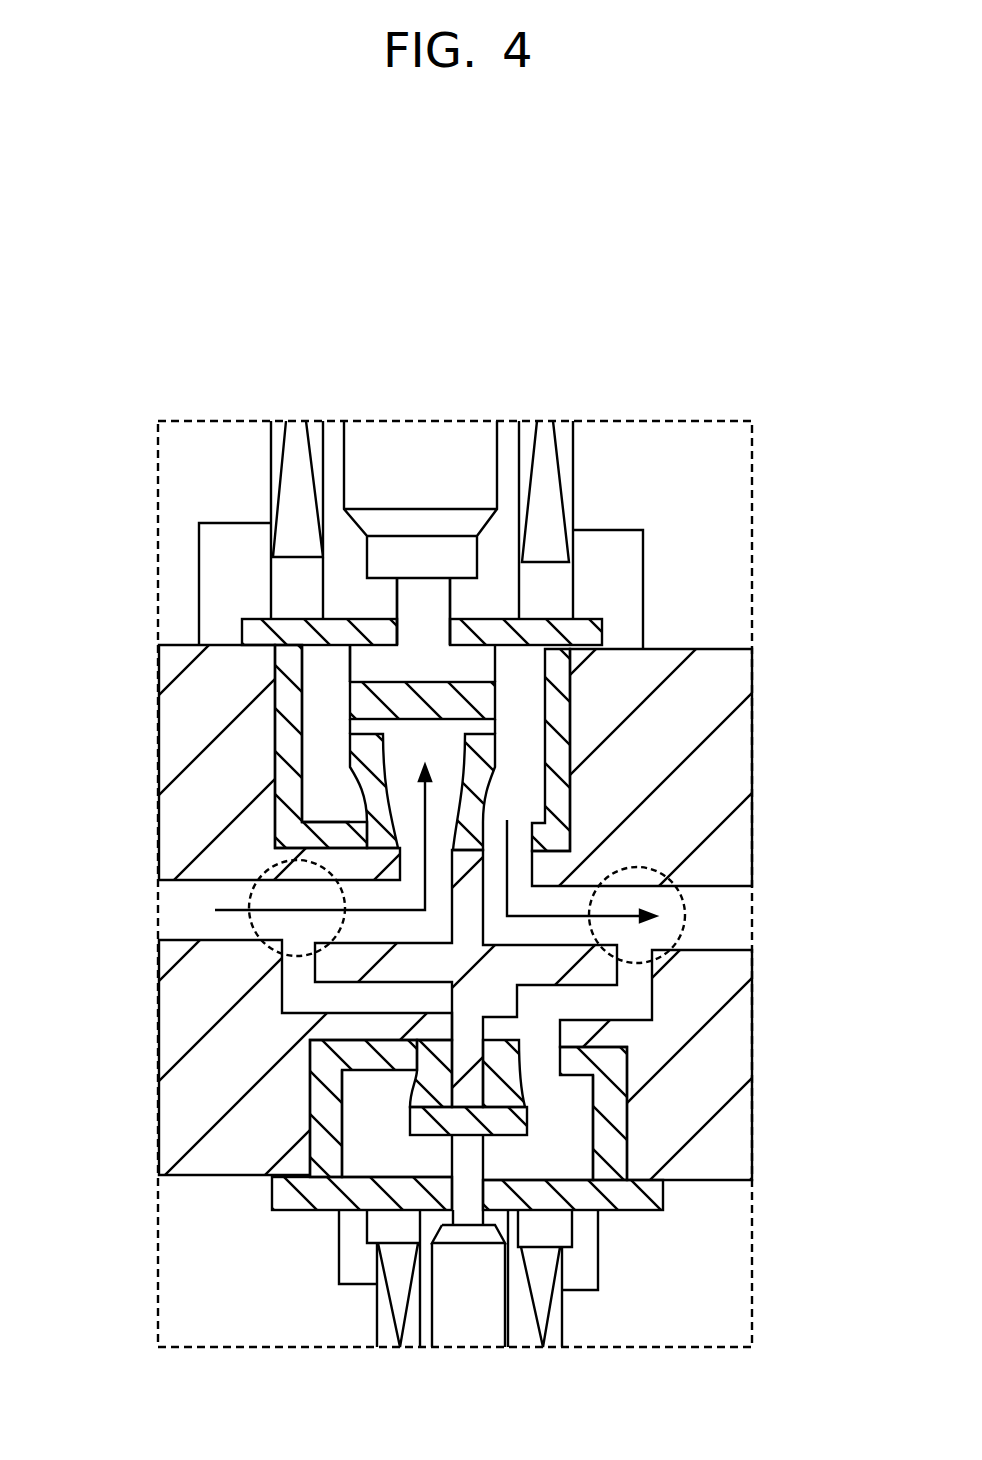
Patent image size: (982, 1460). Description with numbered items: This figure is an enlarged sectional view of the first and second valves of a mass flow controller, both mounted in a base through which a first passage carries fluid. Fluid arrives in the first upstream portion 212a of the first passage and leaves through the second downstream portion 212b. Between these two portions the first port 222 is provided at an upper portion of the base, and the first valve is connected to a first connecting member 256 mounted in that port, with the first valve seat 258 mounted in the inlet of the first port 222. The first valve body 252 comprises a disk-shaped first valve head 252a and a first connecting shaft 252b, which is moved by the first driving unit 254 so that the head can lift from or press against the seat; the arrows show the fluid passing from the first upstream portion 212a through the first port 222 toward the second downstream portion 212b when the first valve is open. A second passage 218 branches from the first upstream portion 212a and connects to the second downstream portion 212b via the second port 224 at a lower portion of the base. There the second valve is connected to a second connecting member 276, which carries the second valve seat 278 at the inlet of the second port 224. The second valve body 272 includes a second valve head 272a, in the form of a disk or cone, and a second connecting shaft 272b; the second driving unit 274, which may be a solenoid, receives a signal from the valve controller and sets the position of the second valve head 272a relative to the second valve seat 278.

The first driving unit 254 is at (290, 470).
The first connecting shaft 252b is at (410, 598).
The first valve body 252 is at (505, 672).
The first port 222 is at (318, 692).
The first connecting member 256 is at (288, 788).
The first valve head 252a is at (473, 703).
The first valve seat 258 is at (476, 784).
The first upstream portion of the first passage 212a is at (247, 893).
The second downstream portion of the first passage 212b is at (682, 908).
The second passage 218 is at (293, 995).
The second connecting member 276 is at (318, 1065).
The second valve seat 278 is at (500, 1072).
The second valve head 272a is at (412, 1106).
The second port 224 is at (570, 1137).
The second valve body 272 is at (398, 1139).
The second connecting shaft 272b is at (472, 1165).
The second driving unit 274 is at (553, 1327).